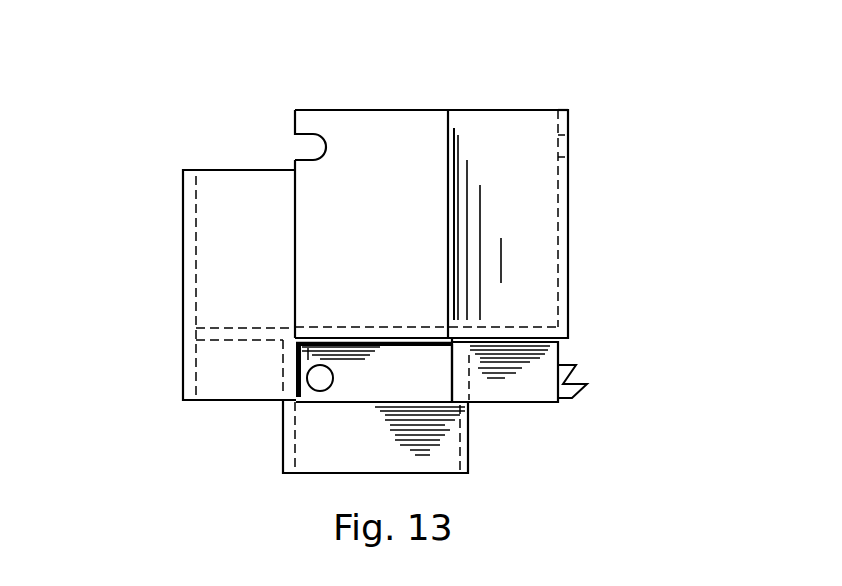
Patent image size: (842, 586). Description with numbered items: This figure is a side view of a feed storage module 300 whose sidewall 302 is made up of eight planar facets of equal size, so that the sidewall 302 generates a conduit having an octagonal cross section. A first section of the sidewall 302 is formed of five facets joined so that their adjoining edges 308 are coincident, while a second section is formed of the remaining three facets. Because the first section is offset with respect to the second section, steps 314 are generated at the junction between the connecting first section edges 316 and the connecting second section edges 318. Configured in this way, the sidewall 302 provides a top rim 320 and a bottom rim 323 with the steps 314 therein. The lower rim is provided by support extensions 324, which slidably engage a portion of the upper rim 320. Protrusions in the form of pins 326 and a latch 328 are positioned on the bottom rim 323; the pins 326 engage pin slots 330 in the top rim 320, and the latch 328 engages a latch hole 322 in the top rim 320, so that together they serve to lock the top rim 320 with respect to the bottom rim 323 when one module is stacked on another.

The tape cassette assembly 300 is at (150, 228).
The sidewall 302 is at (594, 215).
The adjoining edges 308 is at (303, 338).
The steps 314 is at (410, 346).
The connecting first section edges 316 is at (297, 232).
The connecting second section edges 318 is at (239, 285).
The top rim 320 is at (569, 110).
The latch hole 322 is at (569, 143).
The bottom rim 323 is at (562, 345).
The support extensions 324 is at (437, 393).
The pins 326 is at (313, 391).
The latch 328 is at (588, 385).
The pin slots 330 is at (313, 152).